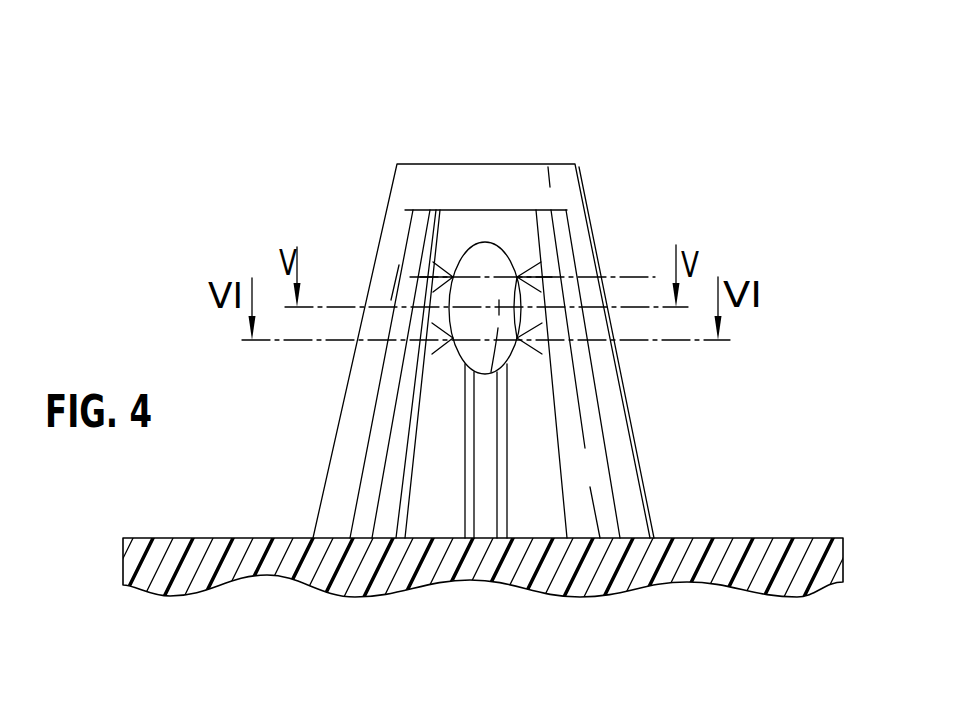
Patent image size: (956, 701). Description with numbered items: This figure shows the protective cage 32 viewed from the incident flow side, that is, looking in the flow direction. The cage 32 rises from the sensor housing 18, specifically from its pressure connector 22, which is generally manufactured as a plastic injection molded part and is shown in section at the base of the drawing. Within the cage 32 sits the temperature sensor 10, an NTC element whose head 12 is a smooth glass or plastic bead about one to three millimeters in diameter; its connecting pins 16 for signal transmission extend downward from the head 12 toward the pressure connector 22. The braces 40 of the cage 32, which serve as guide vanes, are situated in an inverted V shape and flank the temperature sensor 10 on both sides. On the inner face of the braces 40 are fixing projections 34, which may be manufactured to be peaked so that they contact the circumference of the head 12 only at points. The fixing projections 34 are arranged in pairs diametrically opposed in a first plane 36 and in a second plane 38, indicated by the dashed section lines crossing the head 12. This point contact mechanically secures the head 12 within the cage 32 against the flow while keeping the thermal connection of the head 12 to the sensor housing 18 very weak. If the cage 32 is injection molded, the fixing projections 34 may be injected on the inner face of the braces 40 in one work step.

The cage 32 is at (588, 142).
The temperature sensor 10 is at (485, 233).
The head 12 is at (485, 260).
The connecting pins 16 is at (500, 474).
The fixing projections 34 is at (447, 275).
The first plane 36 is at (643, 277).
The second plane 38 is at (688, 342).
The braces 40 is at (380, 408).
The sensor housing 18 is at (489, 594).
The pressure connector 22 is at (773, 573).